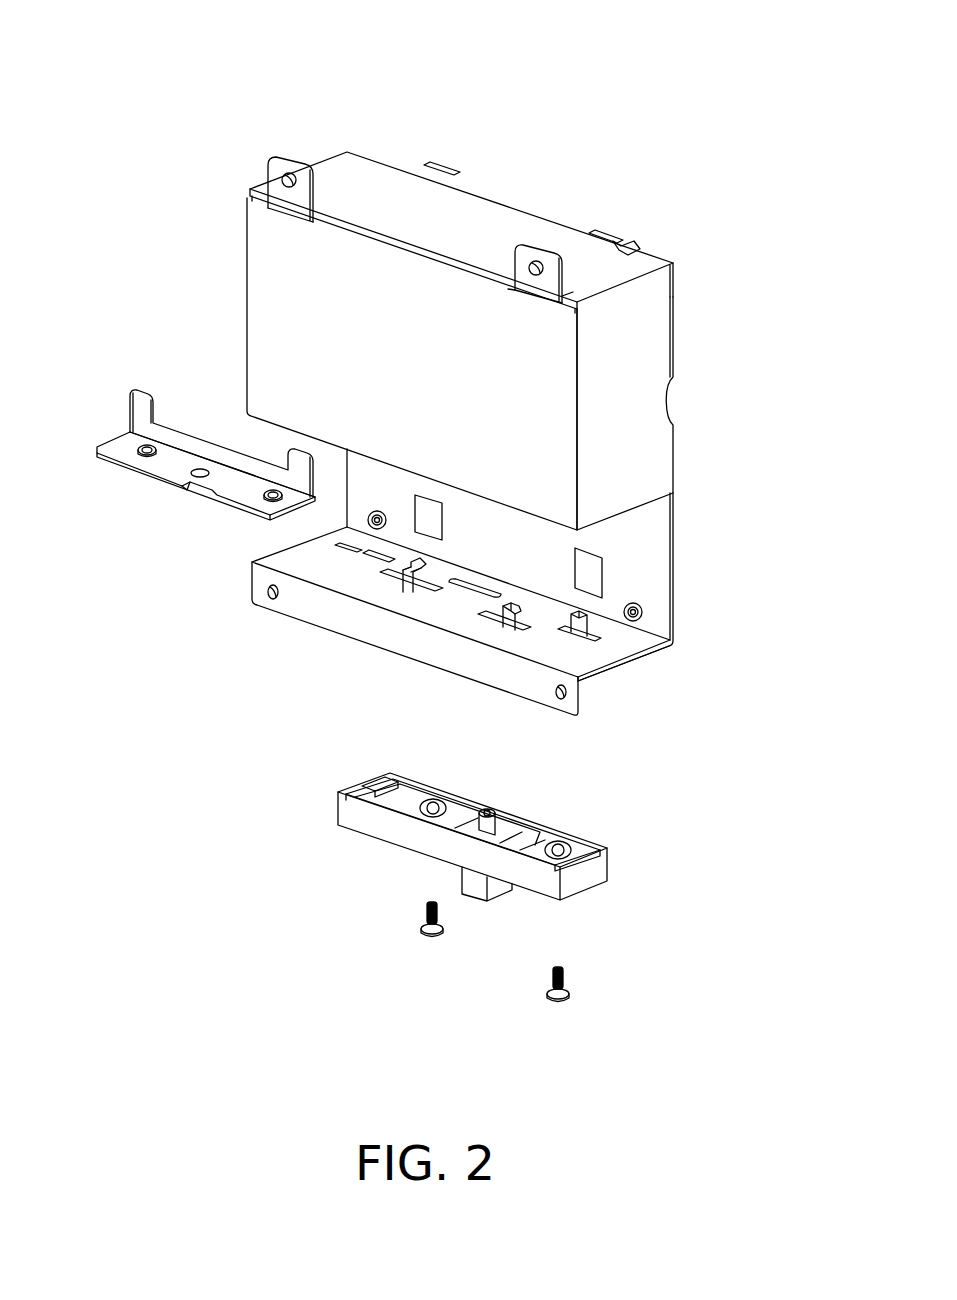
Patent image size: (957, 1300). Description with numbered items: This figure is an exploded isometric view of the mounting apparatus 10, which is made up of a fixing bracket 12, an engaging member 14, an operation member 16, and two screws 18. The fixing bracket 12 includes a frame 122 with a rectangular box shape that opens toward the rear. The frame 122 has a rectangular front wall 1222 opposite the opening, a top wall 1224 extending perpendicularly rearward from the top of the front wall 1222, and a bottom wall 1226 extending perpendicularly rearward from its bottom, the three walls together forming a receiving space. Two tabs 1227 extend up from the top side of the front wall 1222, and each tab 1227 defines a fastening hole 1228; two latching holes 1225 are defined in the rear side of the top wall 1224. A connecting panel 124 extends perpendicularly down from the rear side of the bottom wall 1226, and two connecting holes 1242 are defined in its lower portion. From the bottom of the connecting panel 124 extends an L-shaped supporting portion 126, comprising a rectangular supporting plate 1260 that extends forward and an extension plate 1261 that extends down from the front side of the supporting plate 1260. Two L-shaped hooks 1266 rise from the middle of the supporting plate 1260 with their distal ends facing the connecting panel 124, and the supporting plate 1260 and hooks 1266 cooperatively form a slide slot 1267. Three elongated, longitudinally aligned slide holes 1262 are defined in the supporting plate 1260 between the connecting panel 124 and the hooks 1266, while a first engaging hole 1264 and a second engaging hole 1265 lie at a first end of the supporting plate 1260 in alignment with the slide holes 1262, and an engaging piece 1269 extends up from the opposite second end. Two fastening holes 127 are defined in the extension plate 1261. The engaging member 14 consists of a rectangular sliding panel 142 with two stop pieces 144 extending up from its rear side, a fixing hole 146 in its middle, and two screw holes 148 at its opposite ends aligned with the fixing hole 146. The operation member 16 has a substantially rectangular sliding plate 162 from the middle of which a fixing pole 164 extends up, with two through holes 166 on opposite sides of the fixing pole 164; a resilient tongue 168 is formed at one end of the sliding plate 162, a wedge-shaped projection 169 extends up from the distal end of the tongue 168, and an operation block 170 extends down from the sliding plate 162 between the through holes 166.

The mounting apparatus 10 is at (183, 65).
The fixing bracket 12 is at (676, 183).
The frame 122 is at (648, 352).
The front wall 1222 is at (277, 256).
The top wall 1224 is at (497, 202).
The latching hole 1225 is at (623, 222).
The bottom wall 1226 is at (388, 519).
The tab 1227 is at (270, 168).
The fastening hole 1228 is at (291, 175).
The connecting panel 124 is at (658, 549).
The connecting hole 1242 is at (600, 572).
The supporting portion 126 is at (632, 641).
The supporting plate 1260 is at (625, 660).
The extension plate 1261 is at (447, 658).
The slide hole 1262 is at (463, 590).
The first engaging hole 1264 is at (345, 548).
The second engaging hole 1265 is at (375, 556).
The hook 1266 is at (407, 593).
The slide slot 1267 is at (520, 617).
The engaging piece 1269 is at (645, 606).
The fastening hole 127 is at (566, 693).
The engaging member 14 is at (130, 367).
The sliding panel 142 is at (118, 445).
The stop piece 144 is at (137, 395).
The fixing hole 146 is at (198, 477).
The screw hole 148 is at (147, 453).
The operation member 16 is at (630, 858).
The sliding plate 162 is at (588, 878).
The fixing pole 164 is at (490, 820).
The through hole 166 is at (560, 845).
The resilient tongue 168 is at (393, 797).
The wedge-shaped projection 169 is at (380, 785).
The operation block 170 is at (478, 890).
The screw 18 is at (565, 1000).